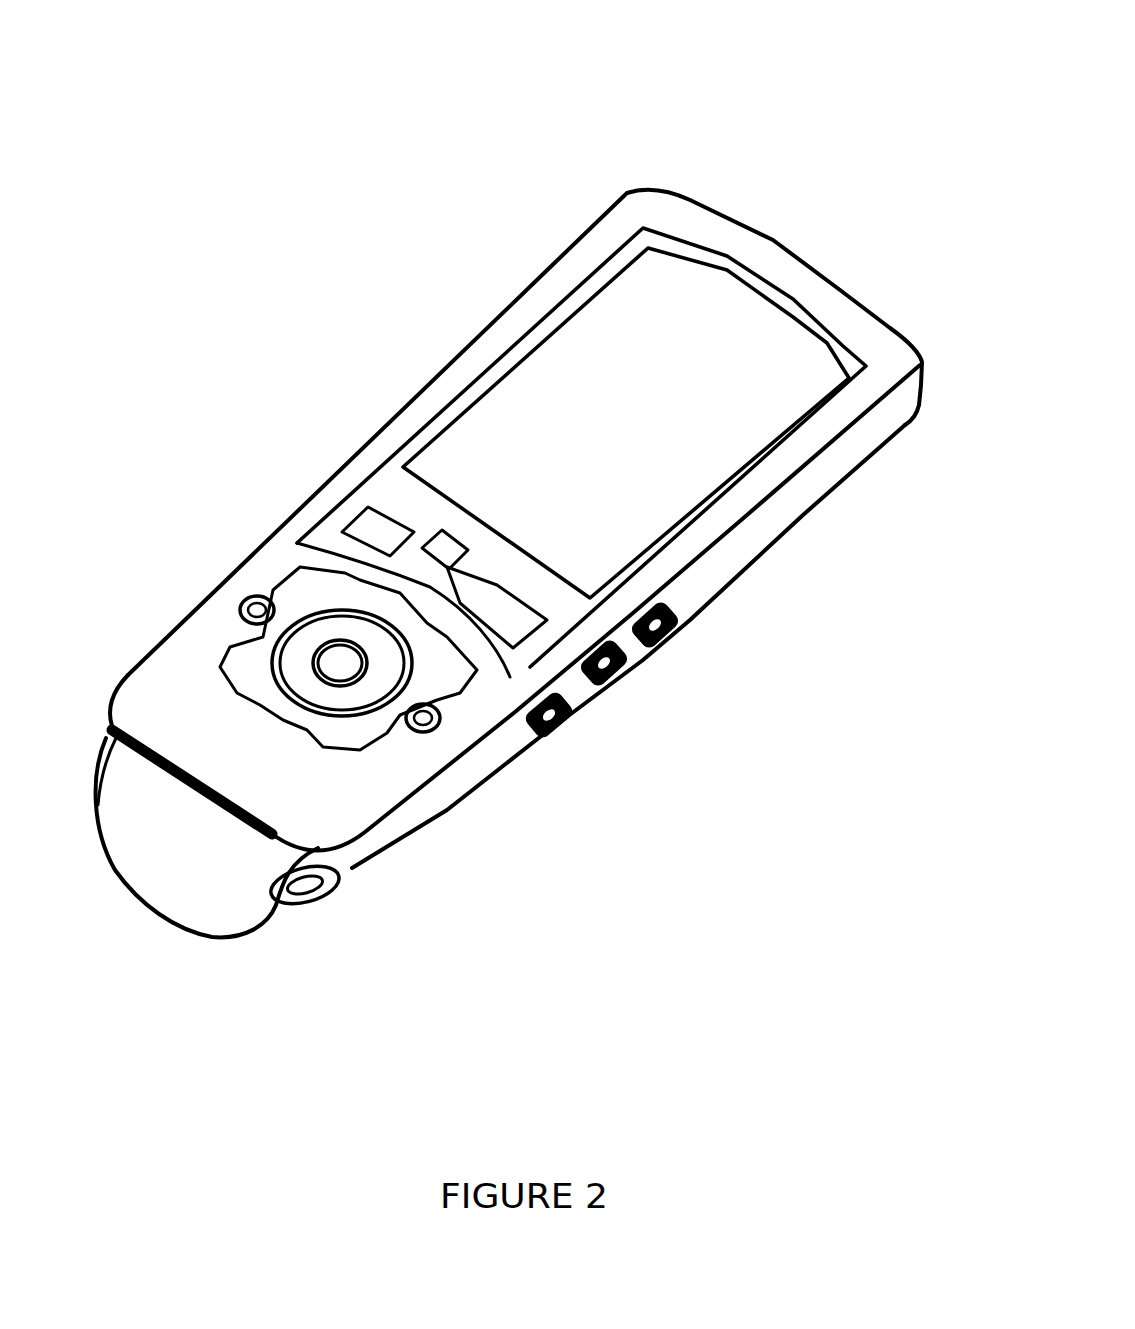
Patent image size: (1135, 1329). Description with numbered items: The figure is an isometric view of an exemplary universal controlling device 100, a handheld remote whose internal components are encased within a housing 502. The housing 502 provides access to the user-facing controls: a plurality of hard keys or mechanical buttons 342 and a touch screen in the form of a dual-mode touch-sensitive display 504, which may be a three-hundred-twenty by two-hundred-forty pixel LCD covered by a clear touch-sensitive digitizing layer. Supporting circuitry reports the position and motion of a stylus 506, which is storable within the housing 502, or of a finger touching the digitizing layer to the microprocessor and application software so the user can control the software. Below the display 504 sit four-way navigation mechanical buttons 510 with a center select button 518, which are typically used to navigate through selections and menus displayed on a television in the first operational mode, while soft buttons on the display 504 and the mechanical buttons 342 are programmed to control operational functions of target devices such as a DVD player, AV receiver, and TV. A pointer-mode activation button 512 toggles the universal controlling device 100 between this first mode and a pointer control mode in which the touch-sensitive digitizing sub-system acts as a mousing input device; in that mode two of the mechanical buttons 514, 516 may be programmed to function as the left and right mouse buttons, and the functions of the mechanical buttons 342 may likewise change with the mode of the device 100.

The universal controlling device 100 is at (541, 278).
The housing 502 is at (773, 253).
The dual-mode touch-sensitive display 504 is at (713, 410).
The stylus 506 is at (330, 897).
The 4-way navigation mechanical buttons 510 is at (347, 657).
The pointer-mode activation button 512 is at (350, 505).
The mechanical button 514 is at (421, 552).
The mechanical button 516 is at (672, 630).
The center select button 518 is at (438, 726).
The hard keys or mechanical buttons 342 is at (157, 620).